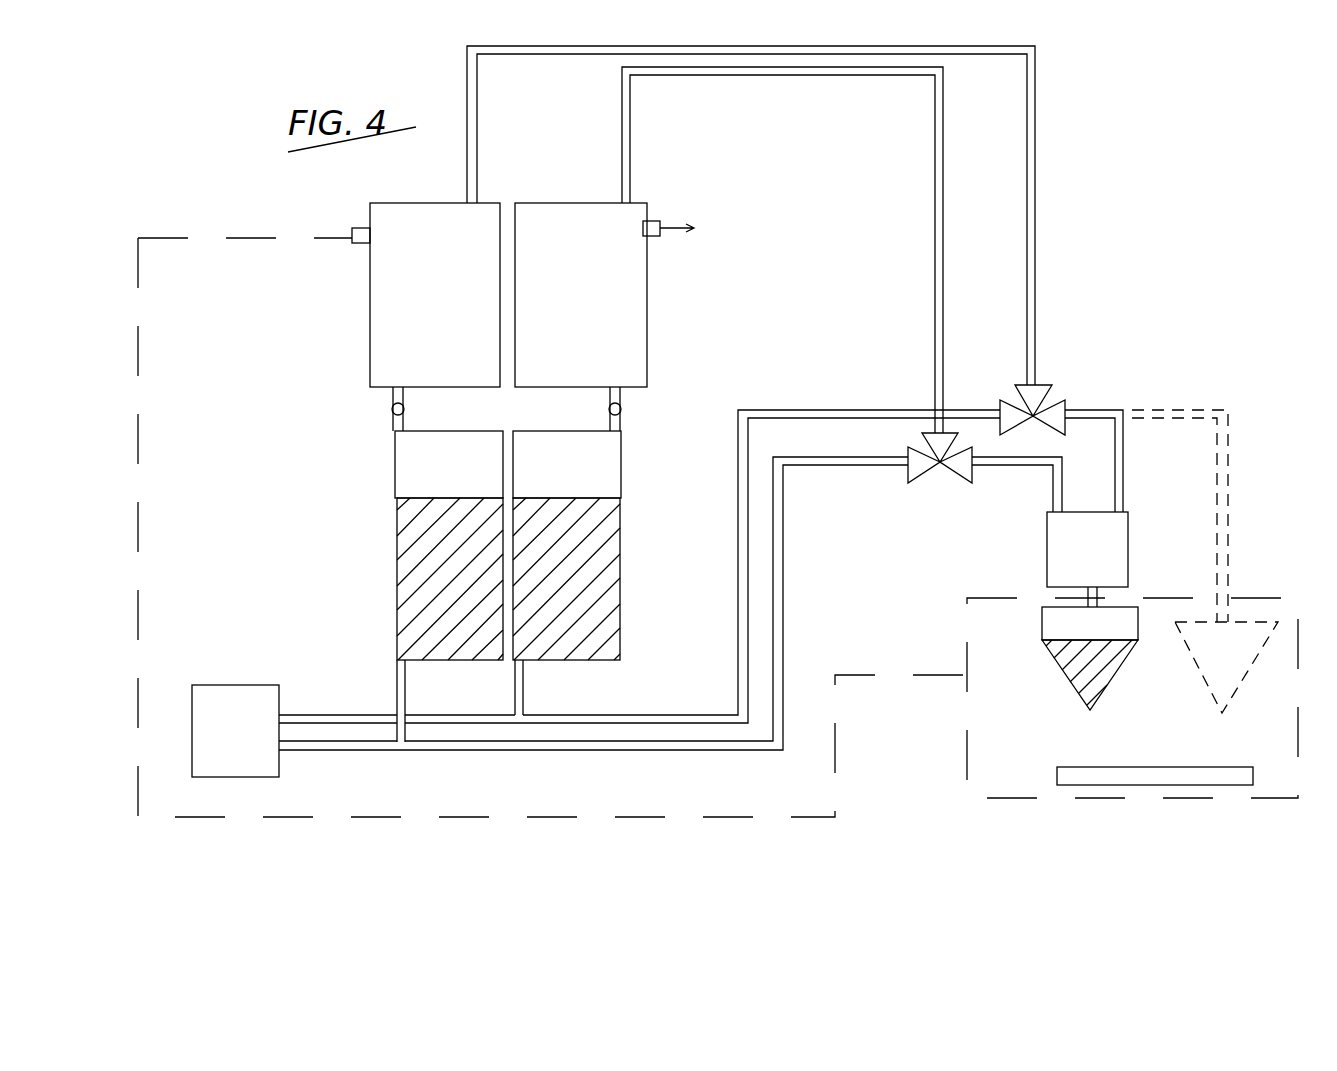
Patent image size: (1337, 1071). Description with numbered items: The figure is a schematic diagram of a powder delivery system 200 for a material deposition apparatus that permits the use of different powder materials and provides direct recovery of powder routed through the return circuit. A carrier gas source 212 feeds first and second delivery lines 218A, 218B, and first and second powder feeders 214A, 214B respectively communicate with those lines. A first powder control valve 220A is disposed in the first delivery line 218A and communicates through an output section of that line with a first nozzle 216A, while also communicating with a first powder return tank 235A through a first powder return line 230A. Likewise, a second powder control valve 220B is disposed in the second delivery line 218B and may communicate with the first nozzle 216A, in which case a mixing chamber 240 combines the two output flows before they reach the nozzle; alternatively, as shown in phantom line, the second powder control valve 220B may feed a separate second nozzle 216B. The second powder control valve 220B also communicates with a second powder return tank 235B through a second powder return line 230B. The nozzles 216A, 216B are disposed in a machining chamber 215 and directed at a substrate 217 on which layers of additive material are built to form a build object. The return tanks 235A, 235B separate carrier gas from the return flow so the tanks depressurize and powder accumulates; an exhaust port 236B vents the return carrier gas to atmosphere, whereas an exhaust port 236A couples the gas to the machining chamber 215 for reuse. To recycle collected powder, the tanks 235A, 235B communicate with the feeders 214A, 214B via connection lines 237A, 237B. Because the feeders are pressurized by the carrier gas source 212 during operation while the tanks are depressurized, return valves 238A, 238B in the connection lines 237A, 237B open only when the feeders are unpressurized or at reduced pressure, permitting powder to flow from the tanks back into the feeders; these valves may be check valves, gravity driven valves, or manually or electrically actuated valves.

The powder delivery system 200 is at (1149, 172).
The carrier gas source 212 is at (218, 685).
The first powder feeder 214A is at (620, 545).
The second powder feeder 214B is at (395, 588).
The machining chamber 215 is at (965, 722).
The first nozzle 216A is at (1064, 667).
The second nozzle 216B is at (1197, 681).
The substrate 217 is at (1074, 771).
The first delivery line 218A is at (785, 500).
The second delivery line 218B is at (757, 408).
The first powder control valve 220A is at (948, 476).
The second powder control valve 220B is at (1046, 398).
The first powder return line 230A is at (935, 147).
The second powder return line 230B is at (1033, 101).
The first powder return tank 235A is at (645, 288).
The second powder return tank 235B is at (372, 338).
The exhaust port 236A is at (358, 228).
The exhaust port 236B is at (656, 219).
The connection line 237A is at (405, 396).
The connection line 237B is at (607, 394).
The return valve 238A is at (391, 409).
The return valve 238B is at (621, 413).
The mixing chamber 240 is at (1047, 560).